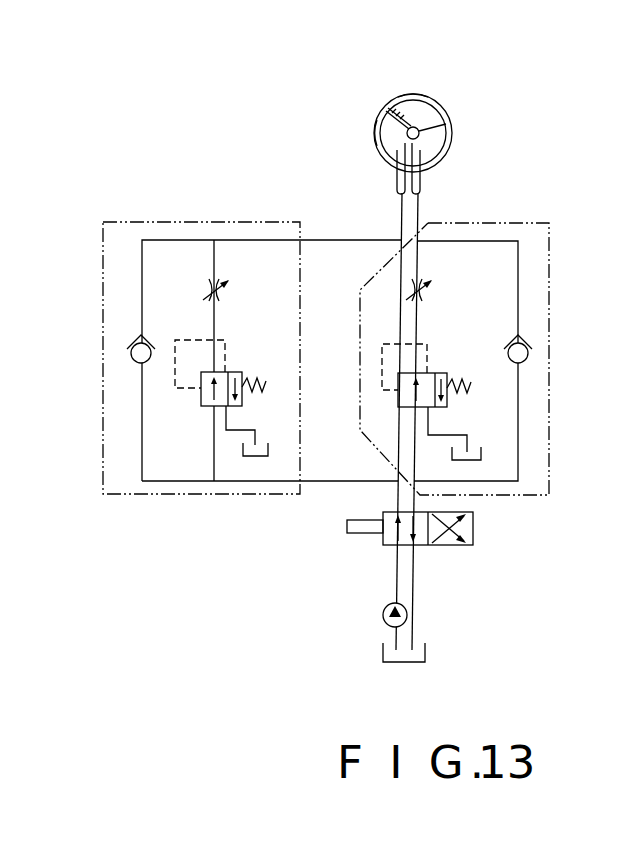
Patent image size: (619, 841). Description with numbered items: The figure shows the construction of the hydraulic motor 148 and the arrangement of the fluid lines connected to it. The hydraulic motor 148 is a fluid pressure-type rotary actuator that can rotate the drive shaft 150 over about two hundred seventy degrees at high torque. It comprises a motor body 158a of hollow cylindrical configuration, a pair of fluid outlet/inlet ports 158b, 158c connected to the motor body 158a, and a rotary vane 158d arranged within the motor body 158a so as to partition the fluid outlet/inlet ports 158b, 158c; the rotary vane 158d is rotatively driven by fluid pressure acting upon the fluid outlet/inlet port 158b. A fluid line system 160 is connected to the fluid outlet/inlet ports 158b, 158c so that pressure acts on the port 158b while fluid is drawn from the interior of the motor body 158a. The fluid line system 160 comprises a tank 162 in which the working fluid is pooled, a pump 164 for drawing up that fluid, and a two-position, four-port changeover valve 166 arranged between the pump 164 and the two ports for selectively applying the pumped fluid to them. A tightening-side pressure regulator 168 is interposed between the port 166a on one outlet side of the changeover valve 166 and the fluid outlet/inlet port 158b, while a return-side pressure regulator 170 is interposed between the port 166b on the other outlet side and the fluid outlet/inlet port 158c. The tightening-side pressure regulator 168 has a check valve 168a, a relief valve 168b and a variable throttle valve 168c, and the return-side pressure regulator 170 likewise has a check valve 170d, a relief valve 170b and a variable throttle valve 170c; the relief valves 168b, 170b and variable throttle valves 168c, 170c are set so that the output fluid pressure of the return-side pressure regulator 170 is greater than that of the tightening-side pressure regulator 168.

The hydraulic motor 148 is at (438, 101).
The drive shaft 150 is at (452, 118).
The motor body 158a is at (400, 100).
The fluid outlet/inlet port 158b is at (396, 187).
The fluid outlet/inlet port 158c is at (421, 188).
The rotary vane 158d is at (381, 130).
The fluid line system 160 is at (312, 484).
The tank 162 is at (425, 662).
The pump 164 is at (383, 620).
The changeover valve 166 is at (453, 546).
The port on one outlet side of the changeover valve 166a is at (383, 512).
The port on another outlet side of the changeover valve 166b is at (415, 512).
The tightening-side pressure regulator 168 is at (160, 494).
The check valve 168a is at (136, 362).
The relief valve 168b is at (201, 398).
The variable throttle valve 168c is at (210, 287).
The return-side pressure regulator 170 is at (530, 497).
The relief valve 170b is at (447, 405).
The variable throttle valve 170c is at (425, 290).
The right check valve 170d is at (530, 361).